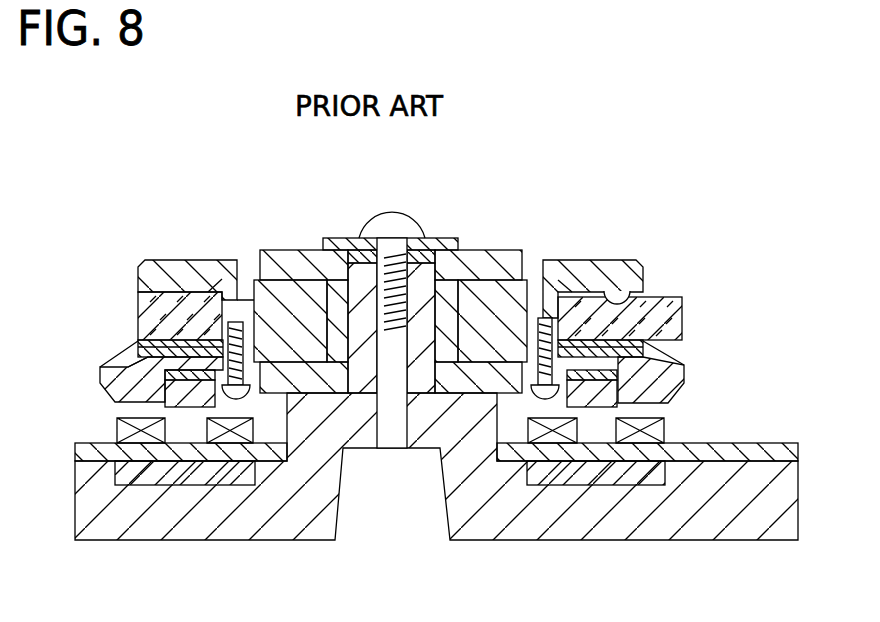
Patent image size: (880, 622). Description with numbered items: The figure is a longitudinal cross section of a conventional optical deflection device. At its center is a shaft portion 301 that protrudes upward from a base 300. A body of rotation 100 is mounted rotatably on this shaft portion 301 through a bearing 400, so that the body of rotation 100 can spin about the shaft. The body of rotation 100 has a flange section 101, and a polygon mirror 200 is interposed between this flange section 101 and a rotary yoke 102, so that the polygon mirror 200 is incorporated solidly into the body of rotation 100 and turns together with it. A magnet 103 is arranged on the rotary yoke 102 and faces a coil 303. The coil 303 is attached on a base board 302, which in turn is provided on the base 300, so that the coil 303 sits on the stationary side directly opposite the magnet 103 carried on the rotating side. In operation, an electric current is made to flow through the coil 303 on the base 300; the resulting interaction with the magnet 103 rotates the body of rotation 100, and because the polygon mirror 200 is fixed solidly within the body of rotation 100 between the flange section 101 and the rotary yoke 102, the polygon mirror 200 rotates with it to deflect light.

The body of rotation 100 is at (139, 303).
The flange section 101 is at (201, 268).
The rotary yoke 102 is at (117, 376).
The magnet 103 is at (165, 412).
The polygon mirror 200 is at (136, 323).
The base 300 is at (436, 491).
The shaft portion 301 is at (420, 282).
The base board 302 is at (740, 452).
The coil 303 is at (117, 432).
The bearing 400 is at (305, 240).